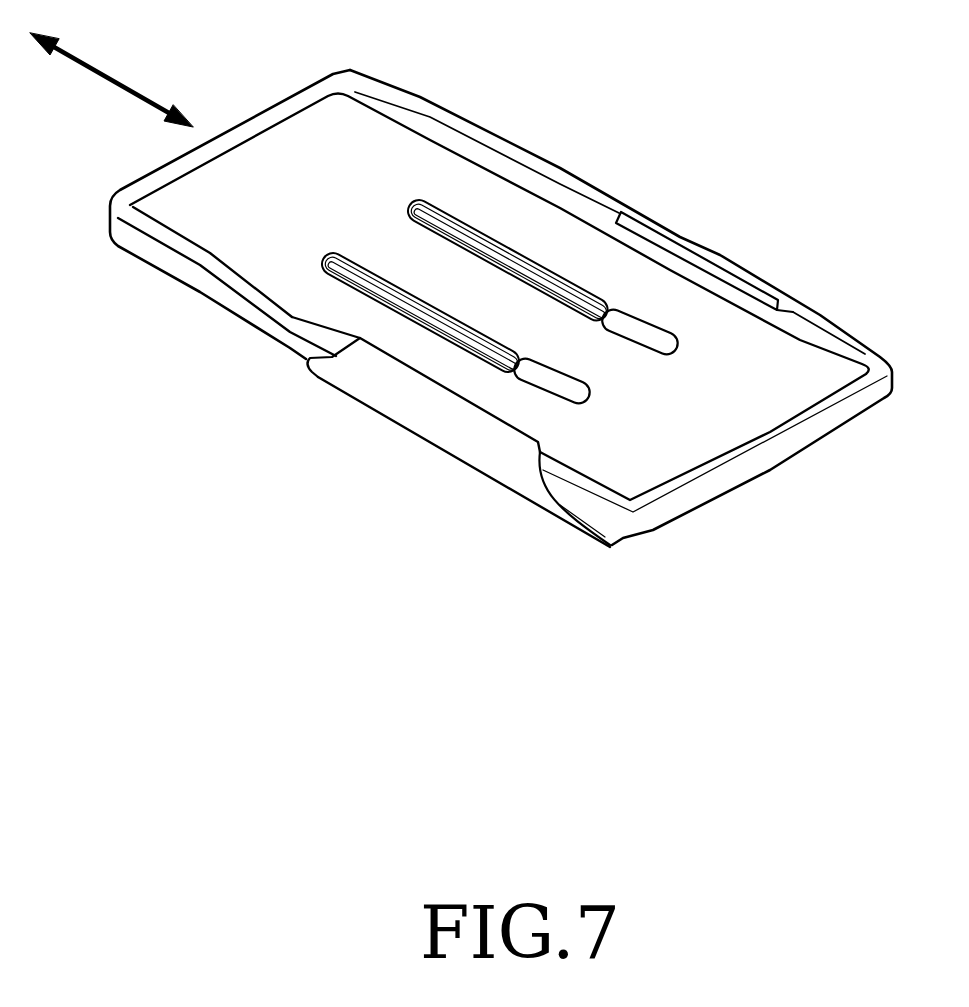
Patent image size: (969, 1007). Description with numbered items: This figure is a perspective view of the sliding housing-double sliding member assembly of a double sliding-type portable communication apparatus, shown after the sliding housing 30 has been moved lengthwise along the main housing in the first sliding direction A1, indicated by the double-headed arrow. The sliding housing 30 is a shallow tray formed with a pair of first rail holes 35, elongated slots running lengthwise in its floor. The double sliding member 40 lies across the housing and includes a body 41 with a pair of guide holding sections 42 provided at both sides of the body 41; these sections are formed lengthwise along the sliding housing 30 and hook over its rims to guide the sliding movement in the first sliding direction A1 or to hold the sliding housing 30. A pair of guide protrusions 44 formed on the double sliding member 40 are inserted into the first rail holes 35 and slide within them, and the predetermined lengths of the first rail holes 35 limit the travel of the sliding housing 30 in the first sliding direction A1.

The sliding housing 30 is at (440, 97).
The first rail holes 35 is at (513, 262).
The double sliding member 40 is at (458, 457).
The body 41 is at (613, 541).
The guide holding sections 42 is at (740, 272).
The guide protrusions 44 is at (580, 397).
The first sliding direction A1 is at (137, 90).